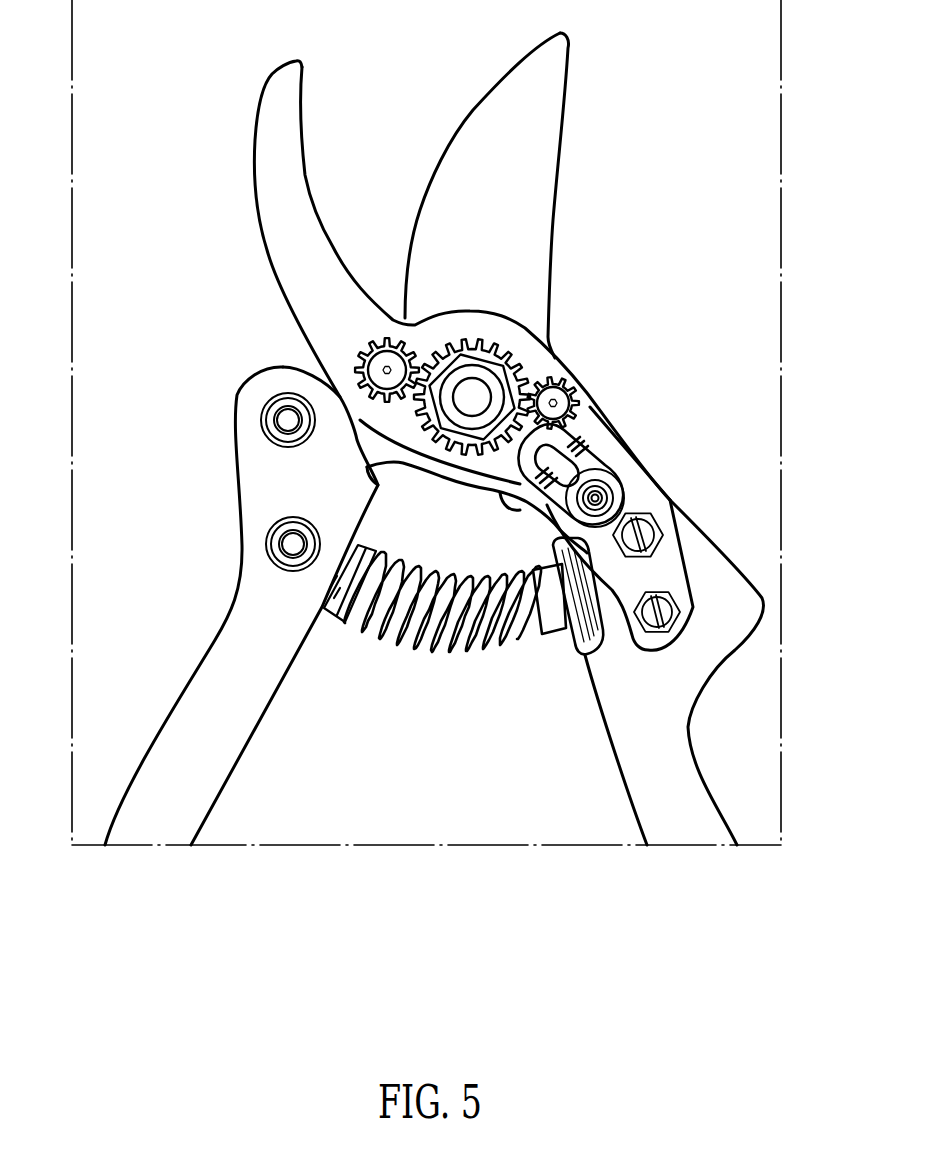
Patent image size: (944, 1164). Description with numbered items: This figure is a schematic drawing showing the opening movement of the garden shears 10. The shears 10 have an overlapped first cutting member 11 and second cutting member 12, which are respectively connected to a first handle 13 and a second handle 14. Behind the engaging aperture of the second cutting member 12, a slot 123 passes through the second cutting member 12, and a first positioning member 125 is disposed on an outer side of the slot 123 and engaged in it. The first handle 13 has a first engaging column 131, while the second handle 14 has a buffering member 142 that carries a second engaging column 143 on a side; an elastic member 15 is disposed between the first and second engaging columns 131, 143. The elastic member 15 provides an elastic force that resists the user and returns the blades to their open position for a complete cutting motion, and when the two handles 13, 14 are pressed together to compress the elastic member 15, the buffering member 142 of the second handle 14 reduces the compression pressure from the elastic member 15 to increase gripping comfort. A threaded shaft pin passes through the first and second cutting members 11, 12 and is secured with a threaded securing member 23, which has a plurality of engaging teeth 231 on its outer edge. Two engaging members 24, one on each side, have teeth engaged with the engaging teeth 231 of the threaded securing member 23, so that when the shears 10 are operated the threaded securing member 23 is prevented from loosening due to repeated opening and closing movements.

The shears 10 is at (598, 210).
The first cutting member 11 is at (537, 170).
The second cutting member 12 is at (275, 221).
The first handle 13 is at (258, 495).
The second handle 14 is at (683, 692).
The elastic member 15 is at (420, 640).
The threaded securing member 23 is at (458, 362).
The engaging members 24 is at (577, 390).
The slot 123 is at (568, 470).
The first positioning member 125 is at (605, 497).
The first engaging column 131 is at (333, 608).
The buffering member 142 is at (585, 658).
The second engaging column 143 is at (584, 652).
The engaging teeth 231 is at (530, 367).